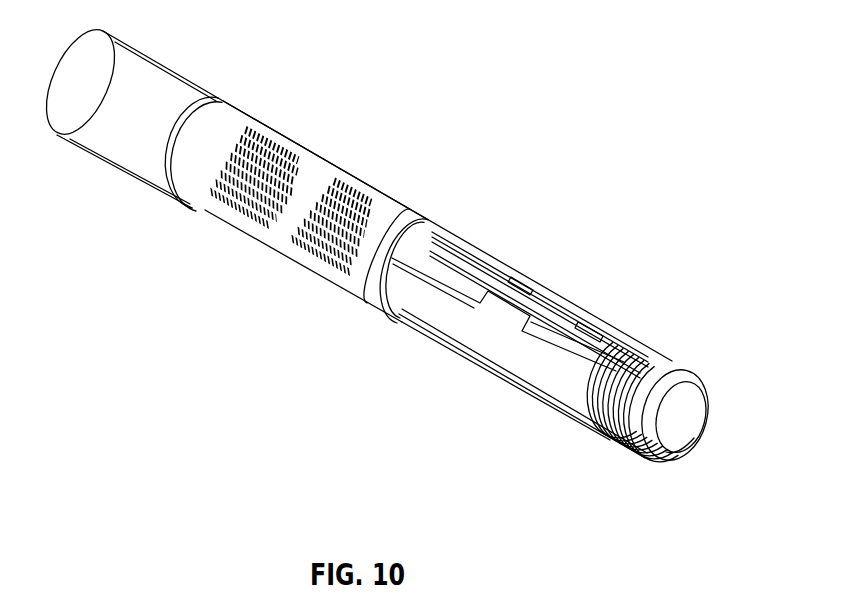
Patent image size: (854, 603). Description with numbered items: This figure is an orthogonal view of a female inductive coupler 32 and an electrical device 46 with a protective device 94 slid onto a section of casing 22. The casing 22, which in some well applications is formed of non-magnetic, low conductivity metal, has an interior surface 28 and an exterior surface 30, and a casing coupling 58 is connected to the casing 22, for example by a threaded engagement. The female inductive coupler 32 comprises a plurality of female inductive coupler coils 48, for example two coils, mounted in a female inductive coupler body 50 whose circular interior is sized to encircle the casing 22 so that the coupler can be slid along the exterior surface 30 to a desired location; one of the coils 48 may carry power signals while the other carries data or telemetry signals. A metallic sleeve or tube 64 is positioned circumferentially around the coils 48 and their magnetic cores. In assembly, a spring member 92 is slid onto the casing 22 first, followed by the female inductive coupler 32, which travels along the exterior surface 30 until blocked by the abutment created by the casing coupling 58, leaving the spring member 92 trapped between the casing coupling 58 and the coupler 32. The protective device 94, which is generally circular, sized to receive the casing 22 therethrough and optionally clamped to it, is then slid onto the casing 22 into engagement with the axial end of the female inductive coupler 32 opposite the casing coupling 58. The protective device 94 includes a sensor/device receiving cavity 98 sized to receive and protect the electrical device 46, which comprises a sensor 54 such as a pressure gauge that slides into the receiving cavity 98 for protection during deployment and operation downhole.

The casing 22 is at (506, 341).
The interior surface 28 is at (697, 437).
The exterior surface 30 is at (578, 413).
The female inductive coupler 32 is at (347, 150).
The electrical device 46 is at (478, 256).
The female inductive coupler coils 48 is at (222, 205).
The female inductive coupler body 50 is at (371, 298).
The sensor 54 is at (535, 290).
The casing coupling 58 is at (142, 121).
The metallic sleeve or tube 64 is at (375, 187).
The spring member 92 is at (218, 100).
The protective device 94 is at (528, 355).
The sensor/device receiving cavity 98 is at (608, 326).